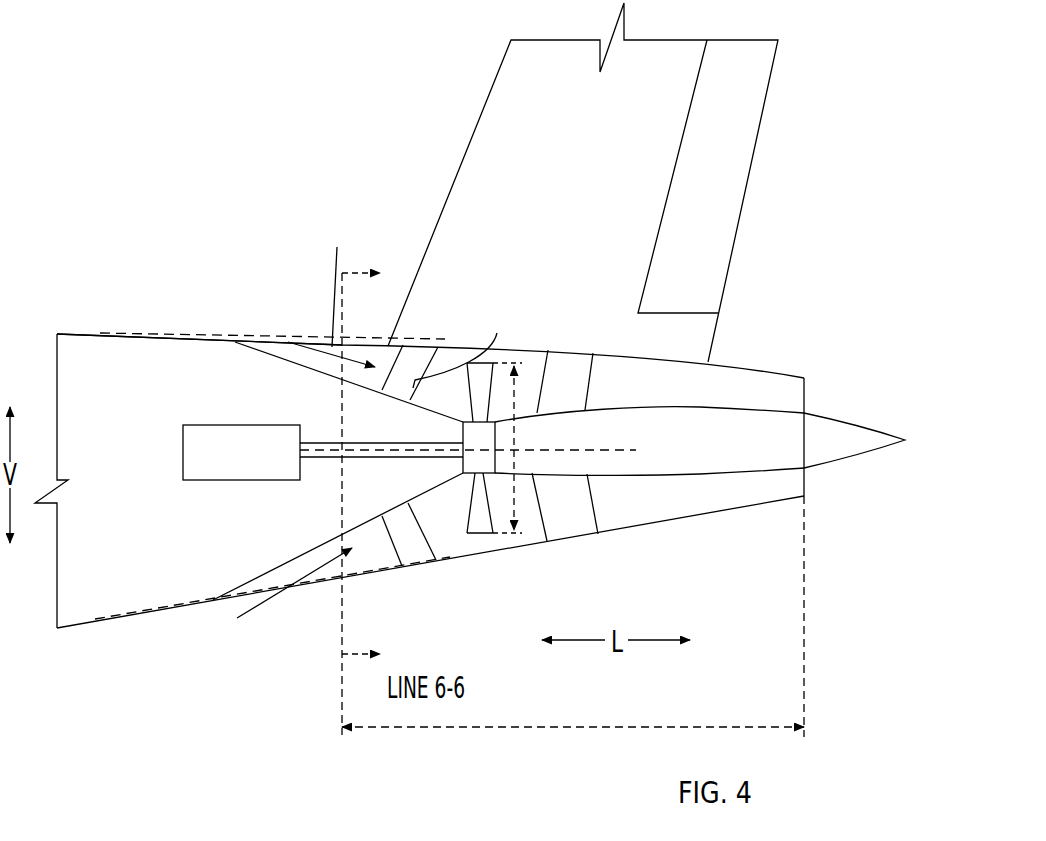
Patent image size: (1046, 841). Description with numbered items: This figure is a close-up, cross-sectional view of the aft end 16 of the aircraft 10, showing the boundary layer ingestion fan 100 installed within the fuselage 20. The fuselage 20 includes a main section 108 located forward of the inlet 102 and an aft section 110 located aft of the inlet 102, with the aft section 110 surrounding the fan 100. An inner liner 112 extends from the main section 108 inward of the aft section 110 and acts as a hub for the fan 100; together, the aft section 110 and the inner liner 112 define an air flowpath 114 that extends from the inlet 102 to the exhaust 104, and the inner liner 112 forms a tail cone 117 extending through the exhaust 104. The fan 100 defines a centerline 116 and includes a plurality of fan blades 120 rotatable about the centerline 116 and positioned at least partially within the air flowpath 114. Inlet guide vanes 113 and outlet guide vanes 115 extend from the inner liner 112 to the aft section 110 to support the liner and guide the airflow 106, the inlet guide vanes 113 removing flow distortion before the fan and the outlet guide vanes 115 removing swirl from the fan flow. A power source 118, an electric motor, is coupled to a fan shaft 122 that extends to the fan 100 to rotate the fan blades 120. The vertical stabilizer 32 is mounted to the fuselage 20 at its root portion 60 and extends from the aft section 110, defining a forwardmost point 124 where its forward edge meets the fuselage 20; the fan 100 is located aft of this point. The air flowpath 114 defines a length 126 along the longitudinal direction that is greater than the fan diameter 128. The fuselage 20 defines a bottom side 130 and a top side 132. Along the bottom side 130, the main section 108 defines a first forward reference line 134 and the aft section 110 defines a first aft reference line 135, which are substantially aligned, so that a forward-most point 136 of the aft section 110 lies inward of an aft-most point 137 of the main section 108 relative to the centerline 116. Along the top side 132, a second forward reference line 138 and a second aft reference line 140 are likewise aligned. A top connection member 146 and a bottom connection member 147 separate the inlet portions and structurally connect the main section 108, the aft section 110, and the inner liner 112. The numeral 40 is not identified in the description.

The aircraft 10 is at (165, 238).
The fuselage 20 is at (135, 291).
The fuselage / body 40 is at (80, 330).
The second forward reference line 138 is at (143, 333).
The main section 108 is at (163, 337).
The airflow 106 is at (310, 343).
The top side 132 is at (258, 254).
The top connection member 146 is at (338, 281).
The forwardmost point 124 is at (357, 338).
The second aft reference line 140 is at (418, 337).
The boundary layer ingestion fan 100 is at (448, 357).
The inlet guide vanes 113 is at (463, 350).
The root portion 60 is at (523, 313).
The aft section 110 is at (530, 350).
The vertical stabilizer 32 is at (583, 212).
The air flowpath 114 is at (630, 377).
The aft end 16 is at (825, 310).
The exhaust 104 is at (815, 393).
The tail cone 117 is at (855, 425).
The fan shaft 122 is at (332, 443).
The power source 118 is at (222, 467).
The centerline 116 is at (563, 441).
The forward-most point 136 is at (355, 570).
The aft-most point 137 is at (197, 598).
The first forward reference line 134 is at (137, 623).
The bottom side 130 is at (188, 657).
The inlet 102 is at (320, 562).
The bottom connection member 147 is at (320, 570).
The first aft reference line 135 is at (368, 583).
The inner liner 112 is at (418, 505).
The fan blades 120 is at (480, 528).
The fan diameter 128 is at (517, 502).
The outlet guide vanes 115 is at (597, 510).
The length 126 is at (505, 730).